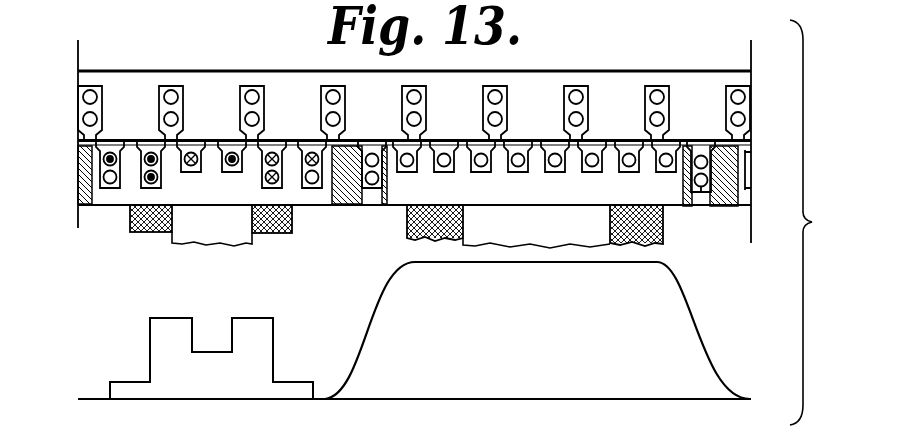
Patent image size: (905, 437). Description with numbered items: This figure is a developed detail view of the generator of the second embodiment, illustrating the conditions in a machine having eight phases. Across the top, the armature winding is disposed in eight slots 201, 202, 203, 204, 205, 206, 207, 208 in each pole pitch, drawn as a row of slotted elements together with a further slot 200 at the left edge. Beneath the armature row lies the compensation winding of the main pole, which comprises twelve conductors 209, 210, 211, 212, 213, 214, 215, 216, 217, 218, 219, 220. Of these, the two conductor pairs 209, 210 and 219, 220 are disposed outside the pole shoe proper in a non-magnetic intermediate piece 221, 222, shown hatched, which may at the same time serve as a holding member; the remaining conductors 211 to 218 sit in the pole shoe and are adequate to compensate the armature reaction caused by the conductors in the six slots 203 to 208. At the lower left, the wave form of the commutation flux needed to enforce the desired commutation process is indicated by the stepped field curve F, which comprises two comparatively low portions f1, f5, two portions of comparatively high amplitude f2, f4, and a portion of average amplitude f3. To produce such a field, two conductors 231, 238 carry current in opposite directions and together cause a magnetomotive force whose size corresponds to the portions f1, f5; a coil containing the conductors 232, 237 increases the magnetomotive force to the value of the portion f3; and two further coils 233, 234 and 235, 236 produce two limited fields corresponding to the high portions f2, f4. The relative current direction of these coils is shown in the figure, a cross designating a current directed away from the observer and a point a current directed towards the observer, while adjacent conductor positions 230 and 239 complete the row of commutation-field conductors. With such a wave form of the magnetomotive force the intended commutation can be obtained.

The upper contact terminal 200 is at (102, 89).
The armature slot 201 is at (183, 89).
The armature slot 202 is at (264, 89).
The armature slot 203 is at (345, 89).
The armature slot 204 is at (426, 89).
The armature slot 205 is at (507, 89).
The armature slot 206 is at (588, 89).
The armature slot 207 is at (669, 89).
The armature slot 208 is at (750, 93).
The compensation winding conductor 209 is at (386, 200).
The compensation winding conductor 210 is at (374, 153).
The compensation winding conductor 211 is at (409, 166).
The compensation winding conductor 212 is at (446, 166).
The compensation winding conductor 213 is at (483, 166).
The compensation winding conductor 214 is at (520, 166).
The compensation winding conductor 215 is at (557, 166).
The compensation winding conductor 216 is at (594, 166).
The compensation winding conductor 217 is at (631, 166).
The compensation winding conductor 218 is at (668, 166).
The compensation winding conductor 219 is at (700, 192).
The compensation winding conductor 220 is at (702, 150).
The non-magnetic intermediate piece 221 is at (333, 203).
The non-magnetic intermediate piece 222 is at (721, 200).
The contact 230 is at (128, 189).
The conductor 231 is at (112, 156).
The coil conductor 232 is at (156, 176).
The coil conductor 233 is at (156, 161).
The coil conductor 234 is at (192, 152).
The coil conductor 235 is at (250, 170).
The coil conductor 236 is at (273, 152).
The coil conductor 237 is at (265, 178).
The conductor 238 is at (338, 146).
The contact 239 is at (310, 181).
The commutation flux field curve F is at (274, 333).
The low-amplitude portion of field curve f1 is at (130, 370).
The high-amplitude portion of field curve f2 is at (171, 304).
The average-amplitude portion of field curve f3 is at (212, 340).
The high-amplitude portion of field curve f4 is at (252, 304).
The low-amplitude portion of field curve f5 is at (293, 370).